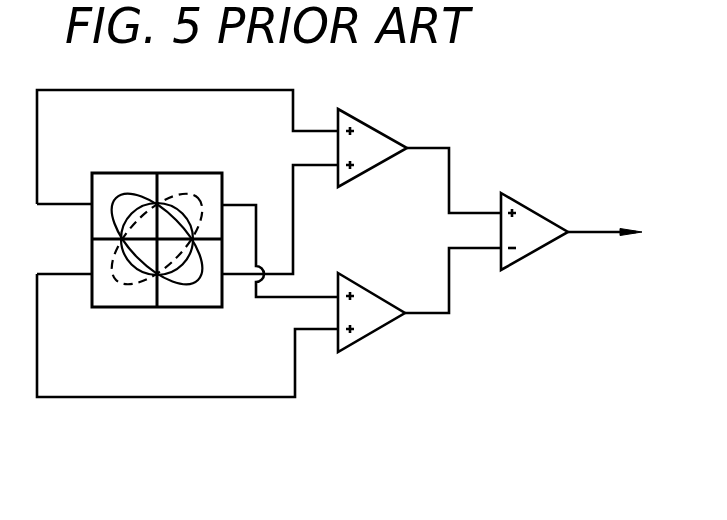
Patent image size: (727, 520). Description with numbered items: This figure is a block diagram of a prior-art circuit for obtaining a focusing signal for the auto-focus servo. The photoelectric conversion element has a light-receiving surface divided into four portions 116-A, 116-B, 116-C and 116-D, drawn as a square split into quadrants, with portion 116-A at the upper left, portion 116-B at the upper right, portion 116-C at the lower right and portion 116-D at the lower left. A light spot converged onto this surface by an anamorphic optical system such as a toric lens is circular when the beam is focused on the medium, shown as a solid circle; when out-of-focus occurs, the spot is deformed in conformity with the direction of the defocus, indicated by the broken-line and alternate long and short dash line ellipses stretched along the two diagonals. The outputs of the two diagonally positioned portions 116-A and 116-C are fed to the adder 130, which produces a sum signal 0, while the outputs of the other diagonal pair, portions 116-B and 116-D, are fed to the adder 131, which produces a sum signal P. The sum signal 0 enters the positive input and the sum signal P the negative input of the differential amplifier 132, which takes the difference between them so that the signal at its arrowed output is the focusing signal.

The light-receiving surface portion A 116-A is at (110, 172).
The light-receiving surface portion B 116-B is at (200, 172).
The light-receiving surface portion C 116-C is at (195, 307).
The light-receiving surface portion D 116-D is at (110, 307).
The adder 130 is at (367, 175).
The adder 131 is at (375, 337).
The differential amplifier 132 is at (550, 245).
The sum signal O 0 is at (432, 146).
The sum signal P is at (428, 316).